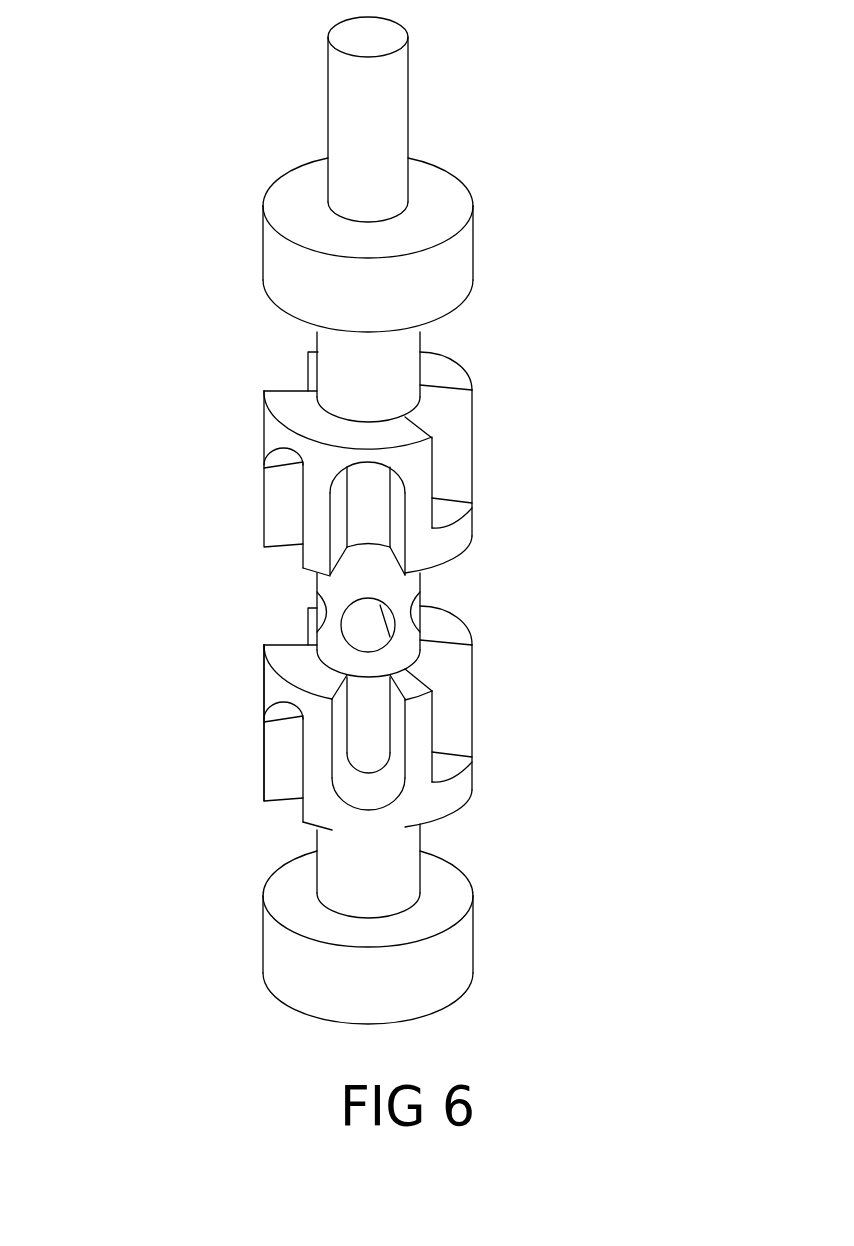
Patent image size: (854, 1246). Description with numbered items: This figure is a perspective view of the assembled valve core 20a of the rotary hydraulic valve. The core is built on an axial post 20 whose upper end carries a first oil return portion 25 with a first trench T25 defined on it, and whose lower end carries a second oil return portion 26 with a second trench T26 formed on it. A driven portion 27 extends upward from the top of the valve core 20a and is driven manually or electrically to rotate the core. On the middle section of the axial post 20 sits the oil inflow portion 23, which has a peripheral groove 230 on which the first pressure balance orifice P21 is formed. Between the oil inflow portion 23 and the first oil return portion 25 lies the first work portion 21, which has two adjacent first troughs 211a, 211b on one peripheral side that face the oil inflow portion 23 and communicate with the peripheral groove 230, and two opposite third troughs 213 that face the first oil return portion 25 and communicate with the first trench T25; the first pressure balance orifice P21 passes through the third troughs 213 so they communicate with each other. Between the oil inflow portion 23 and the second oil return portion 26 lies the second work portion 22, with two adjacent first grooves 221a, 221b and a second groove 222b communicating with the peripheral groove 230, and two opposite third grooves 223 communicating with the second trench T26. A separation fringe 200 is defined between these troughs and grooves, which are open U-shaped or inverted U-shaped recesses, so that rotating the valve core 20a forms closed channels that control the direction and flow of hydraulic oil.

The valve core 20a is at (234, 291).
The driven portion 27 is at (368, 128).
The axial post 20 is at (444, 272).
The first oil return portion 25 is at (483, 377).
The first trench T25 is at (390, 366).
The first work portion 21 is at (354, 483).
The first trough 211a is at (365, 508).
The first trough 211b is at (277, 488).
The third trough 213 is at (290, 381).
The separation fringe 200 is at (417, 510).
The oil inflow portion 23 is at (380, 636).
The peripheral groove 230 is at (380, 636).
The first pressure balance orifice P21 is at (365, 632).
The second work portion 22 is at (340, 747).
The first groove 221a is at (367, 743).
The first groove 221b is at (435, 707).
The second groove 222b is at (293, 635).
The third groove 223 is at (288, 757).
The second oil return portion 26 is at (446, 924).
The second trench T26 is at (392, 862).